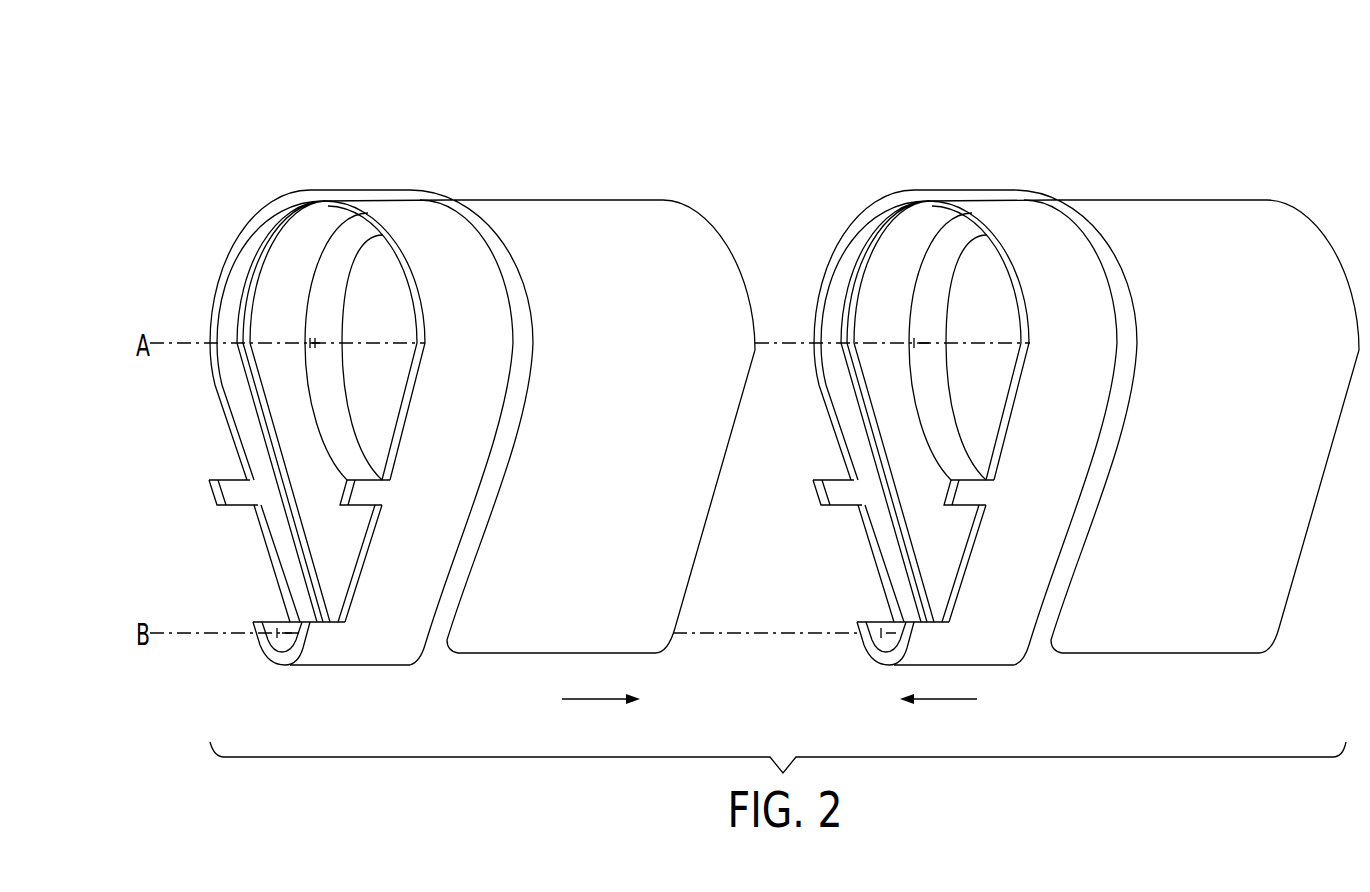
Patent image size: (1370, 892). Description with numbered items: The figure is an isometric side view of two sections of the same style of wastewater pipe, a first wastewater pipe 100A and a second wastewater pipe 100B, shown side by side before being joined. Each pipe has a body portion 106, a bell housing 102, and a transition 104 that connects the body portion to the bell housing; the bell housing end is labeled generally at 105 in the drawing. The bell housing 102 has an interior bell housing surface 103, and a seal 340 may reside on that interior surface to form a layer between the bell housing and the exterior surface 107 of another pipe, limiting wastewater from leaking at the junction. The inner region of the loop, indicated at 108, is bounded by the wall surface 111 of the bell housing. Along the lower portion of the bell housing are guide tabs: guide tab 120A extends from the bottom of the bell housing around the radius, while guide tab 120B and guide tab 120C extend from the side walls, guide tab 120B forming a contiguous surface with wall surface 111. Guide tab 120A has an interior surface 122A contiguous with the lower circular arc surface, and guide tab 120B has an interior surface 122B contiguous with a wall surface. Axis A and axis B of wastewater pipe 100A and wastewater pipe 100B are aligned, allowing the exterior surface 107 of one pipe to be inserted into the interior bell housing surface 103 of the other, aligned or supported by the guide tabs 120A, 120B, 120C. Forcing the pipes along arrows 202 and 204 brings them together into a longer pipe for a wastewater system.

The wastewater pipe 100A is at (218, 176).
The wastewater pipe 100B is at (822, 176).
The bell housing 102 is at (407, 182).
The interior bell housing surface 103 is at (243, 263).
The transition 104 is at (448, 672).
The transition portion 105 is at (407, 210).
The body portion 106 is at (447, 193).
The exterior surface 107 is at (547, 623).
The inner surface of loop 108 is at (380, 297).
The wall surface 111 is at (382, 410).
The guide tab 120A is at (308, 660).
The guide tab 120B is at (230, 478).
The guide tab 120C is at (363, 498).
The interior surface 122A is at (278, 647).
The interior surface 122B is at (237, 498).
The seal 340 is at (240, 374).
The arrow 202 is at (590, 699).
The arrow 204 is at (950, 699).